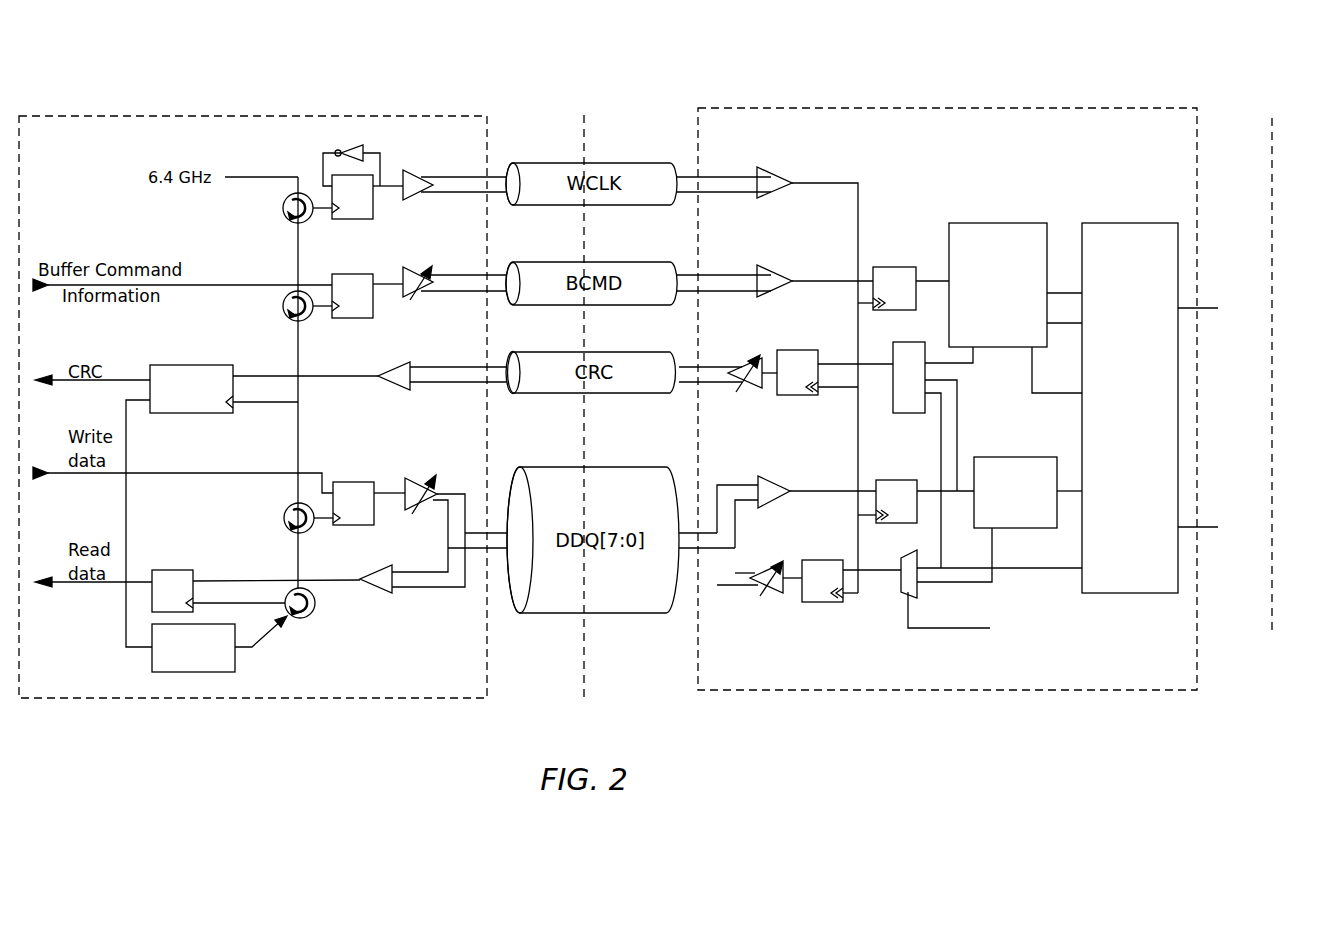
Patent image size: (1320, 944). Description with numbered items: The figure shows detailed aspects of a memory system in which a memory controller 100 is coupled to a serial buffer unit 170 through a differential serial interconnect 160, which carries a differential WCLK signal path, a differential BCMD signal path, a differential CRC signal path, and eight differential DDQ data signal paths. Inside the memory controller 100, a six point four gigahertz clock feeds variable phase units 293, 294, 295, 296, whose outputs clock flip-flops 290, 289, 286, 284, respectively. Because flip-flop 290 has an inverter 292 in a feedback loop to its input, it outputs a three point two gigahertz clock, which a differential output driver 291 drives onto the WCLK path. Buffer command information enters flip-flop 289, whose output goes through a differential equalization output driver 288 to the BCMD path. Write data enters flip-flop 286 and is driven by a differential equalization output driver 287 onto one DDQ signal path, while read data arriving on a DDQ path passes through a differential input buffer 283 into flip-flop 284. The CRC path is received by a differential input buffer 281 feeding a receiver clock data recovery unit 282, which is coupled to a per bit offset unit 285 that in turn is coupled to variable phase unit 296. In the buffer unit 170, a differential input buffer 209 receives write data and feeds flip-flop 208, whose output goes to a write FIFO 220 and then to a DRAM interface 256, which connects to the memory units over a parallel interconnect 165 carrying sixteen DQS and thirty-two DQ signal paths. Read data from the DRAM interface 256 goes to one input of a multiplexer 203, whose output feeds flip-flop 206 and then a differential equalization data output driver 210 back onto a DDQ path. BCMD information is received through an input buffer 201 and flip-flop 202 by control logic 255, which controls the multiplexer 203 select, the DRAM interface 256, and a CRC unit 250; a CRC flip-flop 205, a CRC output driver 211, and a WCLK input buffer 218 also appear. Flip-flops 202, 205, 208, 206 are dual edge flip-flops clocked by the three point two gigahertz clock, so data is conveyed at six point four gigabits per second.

The memory controller 100 is at (253, 407).
The differential serial interconnect 160 is at (584, 357).
The parallel interconnect 165 is at (1267, 331).
The buffer unit 170 is at (947, 399).
The input buffer 201 is at (772, 265).
The flip-flop 202 is at (895, 267).
The multiplexer 203 is at (917, 596).
The flip-flop 205 is at (800, 350).
The flip-flop 206 is at (822, 602).
The flip-flop 208 is at (890, 523).
The differential input buffer 209 is at (774, 476).
The differential equalization data output driver 210 is at (772, 598).
The CRC transmitter 211 is at (758, 352).
The clock receiver 218 is at (772, 167).
The write FIFO 220 is at (1013, 457).
The CRC unit 250 is at (915, 413).
The control logic 255 is at (1003, 223).
The DRAM interface 256 is at (1125, 223).
The differential input buffer 281 is at (388, 388).
The receiver clock data recovery unit 282 is at (205, 413).
The differential input buffer 283 is at (380, 562).
The flip-flop 284 is at (172, 570).
The per bit offset unit 285 is at (235, 663).
The flip-flop 286 is at (356, 482).
The differential equalization output driver 287 is at (418, 478).
The differential equalization output driver 288 is at (418, 267).
The flip-flop 289 is at (355, 318).
The flip-flop 290 is at (355, 219).
The differential output driver 291 is at (418, 170).
The inverter 292 is at (352, 146).
The variable phase unit 293 is at (284, 214).
The variable phase unit 294 is at (284, 314).
The variable phase unit 295 is at (288, 505).
The variable phase unit 296 is at (316, 608).